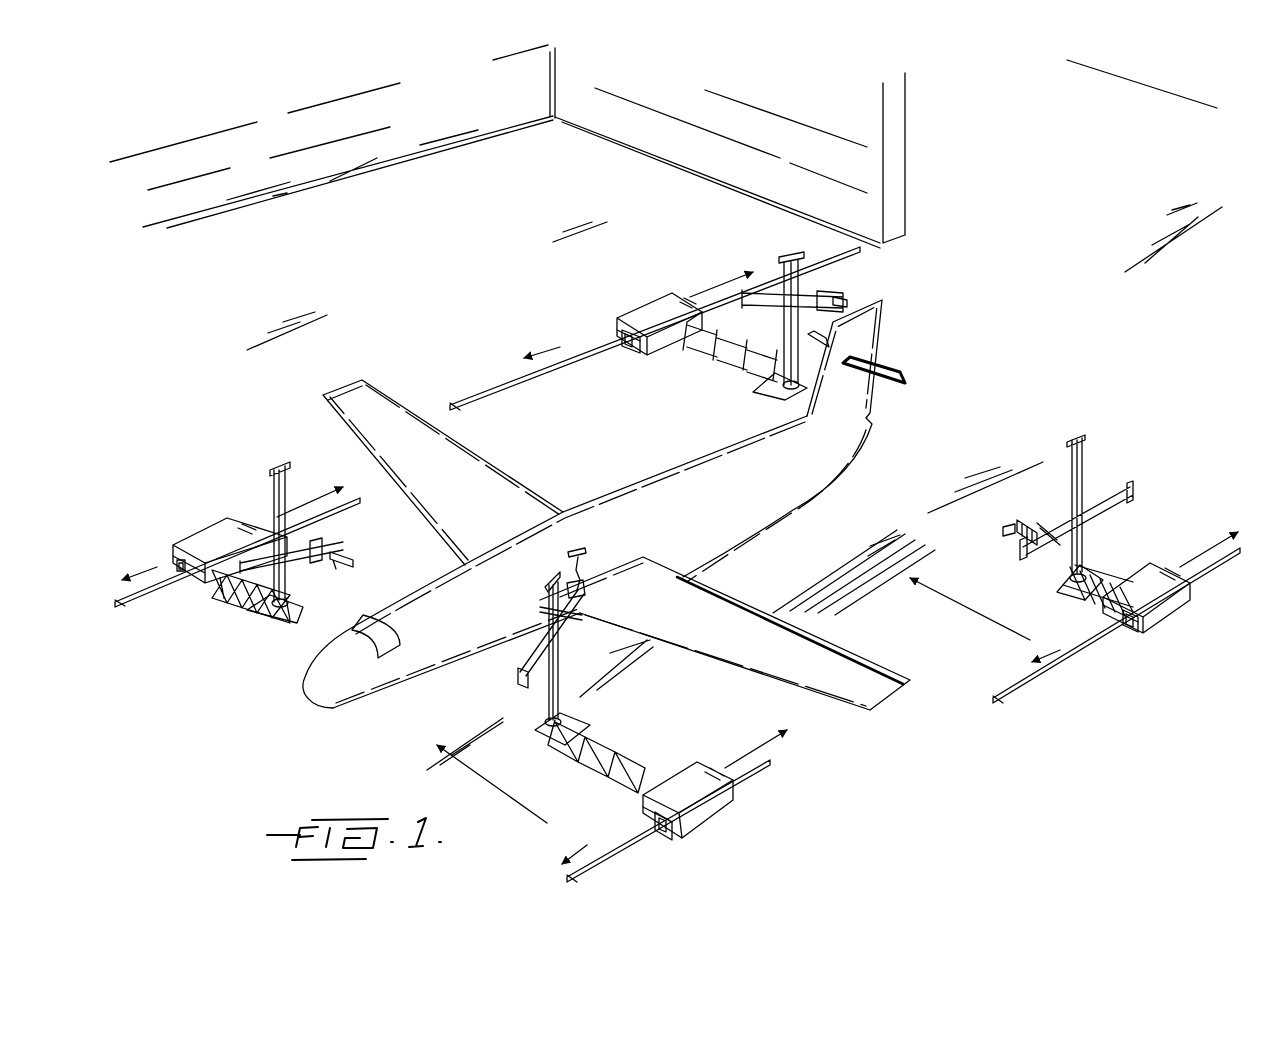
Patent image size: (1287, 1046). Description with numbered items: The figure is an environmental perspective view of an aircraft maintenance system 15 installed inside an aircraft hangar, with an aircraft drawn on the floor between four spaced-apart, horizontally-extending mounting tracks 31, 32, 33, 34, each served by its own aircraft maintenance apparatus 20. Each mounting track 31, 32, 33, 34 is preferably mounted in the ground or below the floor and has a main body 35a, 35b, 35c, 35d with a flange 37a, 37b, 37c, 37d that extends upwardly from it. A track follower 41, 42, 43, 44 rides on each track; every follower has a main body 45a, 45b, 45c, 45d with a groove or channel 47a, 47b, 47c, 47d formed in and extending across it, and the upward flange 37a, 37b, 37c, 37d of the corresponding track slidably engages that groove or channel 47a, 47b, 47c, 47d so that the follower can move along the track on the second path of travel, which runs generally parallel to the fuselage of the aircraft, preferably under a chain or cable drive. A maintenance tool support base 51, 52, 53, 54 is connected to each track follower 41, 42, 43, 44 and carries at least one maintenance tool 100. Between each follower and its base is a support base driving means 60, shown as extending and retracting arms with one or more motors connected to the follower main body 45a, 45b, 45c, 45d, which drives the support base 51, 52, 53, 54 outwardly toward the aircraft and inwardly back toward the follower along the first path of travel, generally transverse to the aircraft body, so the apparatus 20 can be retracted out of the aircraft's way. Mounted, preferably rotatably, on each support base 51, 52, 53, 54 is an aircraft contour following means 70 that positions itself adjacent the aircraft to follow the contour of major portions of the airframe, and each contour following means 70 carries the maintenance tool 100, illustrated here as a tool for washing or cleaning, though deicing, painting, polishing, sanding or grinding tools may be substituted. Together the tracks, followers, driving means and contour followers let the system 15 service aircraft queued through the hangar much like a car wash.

The aircraft maintenance system 15 is at (550, 207).
The aircraft maintenance apparatus 20 is at (200, 463).
The mounting track 31 is at (140, 604).
The mounting track 32 is at (527, 379).
The mounting track 33 is at (632, 846).
The mounting track 34 is at (1043, 670).
The main body of mounting track 35a is at (178, 567).
The main body of mounting track 35b is at (493, 390).
The main body of mounting track 35c is at (592, 873).
The main body of mounting track 35d is at (1010, 688).
The flange 37a is at (185, 585).
The flange 37b is at (620, 340).
The flange 37c is at (663, 832).
The flange 37d is at (1125, 623).
The track follower 41 is at (214, 535).
The track follower 42 is at (655, 300).
The track follower 43 is at (729, 814).
The track follower 44 is at (1179, 606).
The main body of track follower 45a is at (188, 575).
The main body of track follower 45b is at (631, 338).
The main body of track follower 45c is at (667, 828).
The main body of track follower 45d is at (1127, 623).
The groove or channel 47a is at (181, 565).
The groove or channel 47b is at (622, 337).
The groove or channel 47c is at (660, 830).
The groove or channel 47d is at (1138, 619).
The maintenance tool support base 51 is at (272, 612).
The maintenance tool support base 52 is at (772, 392).
The maintenance tool support base 53 is at (545, 717).
The maintenance tool support base 54 is at (1072, 578).
The support base driving means 60 is at (233, 614).
The aircraft contour following means 70 is at (354, 538).
The maintenance tool 100 is at (335, 568).